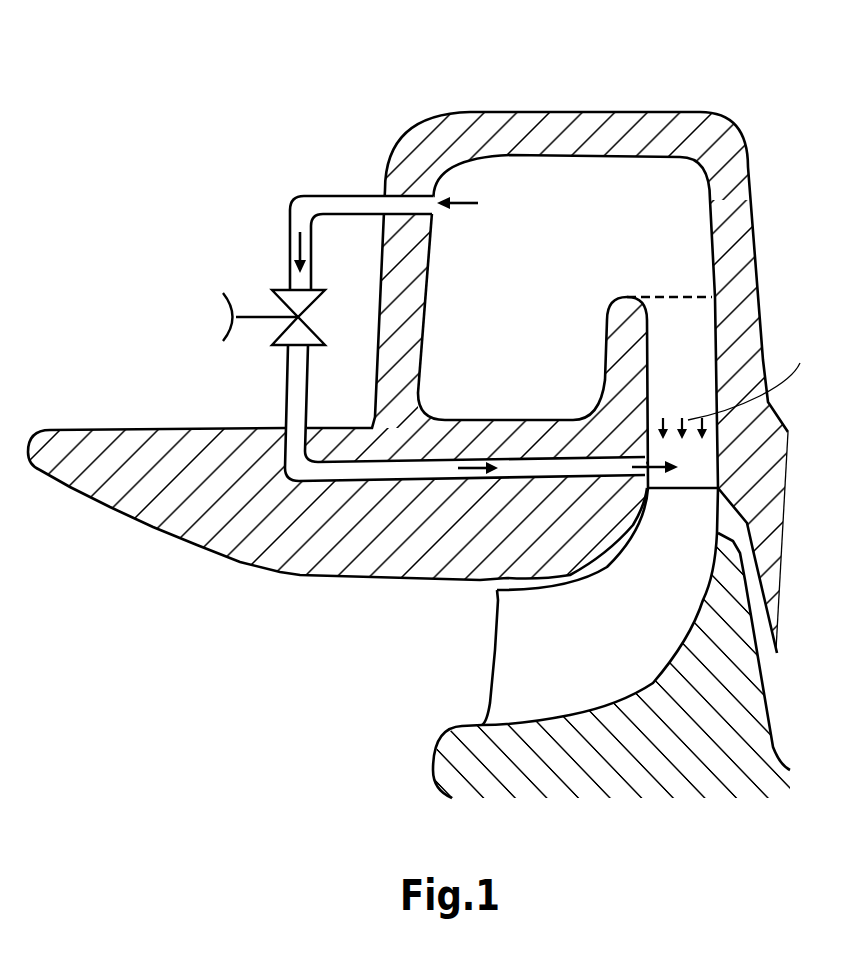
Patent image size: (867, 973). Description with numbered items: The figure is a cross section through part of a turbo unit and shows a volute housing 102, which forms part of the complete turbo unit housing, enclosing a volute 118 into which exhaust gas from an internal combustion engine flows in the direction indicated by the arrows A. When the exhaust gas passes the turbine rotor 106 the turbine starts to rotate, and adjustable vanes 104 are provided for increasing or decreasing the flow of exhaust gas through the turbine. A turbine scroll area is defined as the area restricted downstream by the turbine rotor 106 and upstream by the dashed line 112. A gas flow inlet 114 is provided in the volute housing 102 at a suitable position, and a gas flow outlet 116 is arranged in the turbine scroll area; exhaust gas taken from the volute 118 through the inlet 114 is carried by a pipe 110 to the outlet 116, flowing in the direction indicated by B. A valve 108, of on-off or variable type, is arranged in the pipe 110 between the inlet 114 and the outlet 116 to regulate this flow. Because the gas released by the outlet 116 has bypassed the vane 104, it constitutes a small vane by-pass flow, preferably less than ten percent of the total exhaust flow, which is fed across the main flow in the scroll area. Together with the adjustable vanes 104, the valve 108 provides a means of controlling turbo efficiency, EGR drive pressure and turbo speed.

The volute housing 102 is at (725, 240).
The vane 104 is at (686, 372).
The turbine rotor 106 is at (693, 542).
The valve 108 is at (286, 292).
The pipe 110 is at (338, 193).
The line 112 is at (672, 296).
The gas flow inlet 114 is at (433, 205).
The gas flow outlet 116 is at (643, 465).
The volute 118 is at (590, 193).